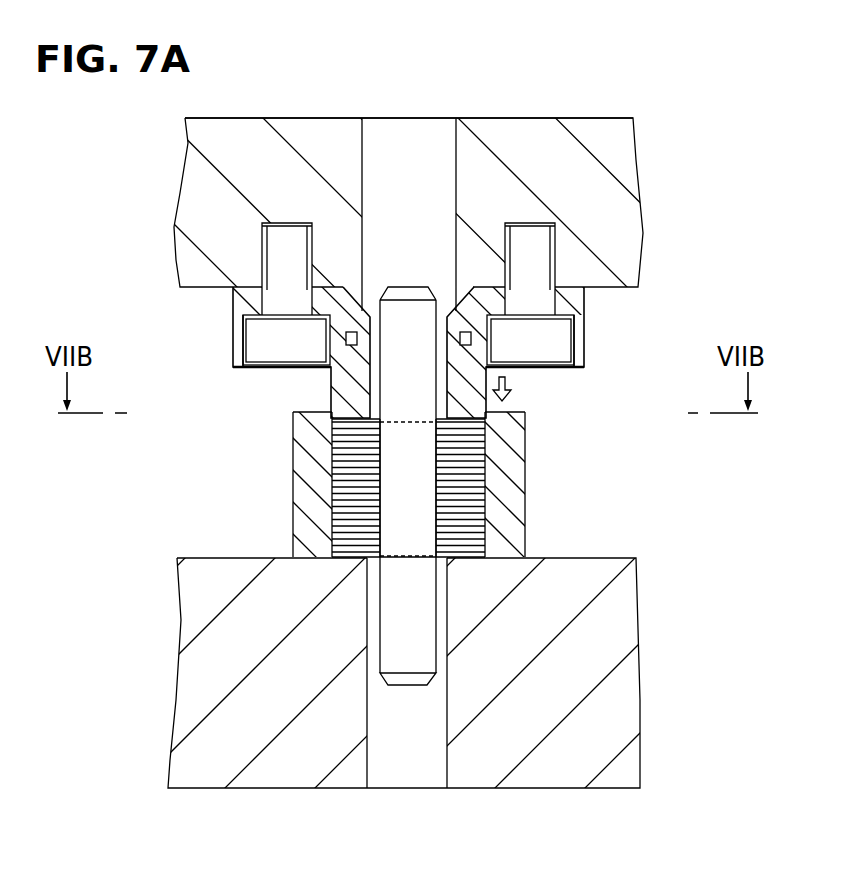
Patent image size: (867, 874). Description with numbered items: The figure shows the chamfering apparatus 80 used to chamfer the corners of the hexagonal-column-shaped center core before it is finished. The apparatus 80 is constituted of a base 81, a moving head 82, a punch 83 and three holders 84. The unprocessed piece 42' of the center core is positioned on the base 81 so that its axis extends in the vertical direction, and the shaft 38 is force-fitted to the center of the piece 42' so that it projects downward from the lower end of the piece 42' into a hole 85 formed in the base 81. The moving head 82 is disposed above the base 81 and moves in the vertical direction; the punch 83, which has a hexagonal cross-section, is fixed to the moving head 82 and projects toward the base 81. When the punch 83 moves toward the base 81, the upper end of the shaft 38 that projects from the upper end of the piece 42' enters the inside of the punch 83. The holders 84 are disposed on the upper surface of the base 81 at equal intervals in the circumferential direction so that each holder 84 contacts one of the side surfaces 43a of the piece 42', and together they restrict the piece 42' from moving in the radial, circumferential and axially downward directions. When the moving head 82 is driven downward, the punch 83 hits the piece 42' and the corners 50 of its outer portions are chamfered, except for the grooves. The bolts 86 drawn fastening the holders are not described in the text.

The chamfering apparatus 80 is at (637, 111).
The moving head 82 is at (200, 195).
The base 81 is at (197, 600).
The hole 85 is at (367, 748).
The punch 83 is at (345, 381).
The bolt 86 is at (408, 294).
The shaft 38 is at (405, 320).
The holder 84 is at (302, 488).
The corner 50 is at (330, 418).
The side surface 43a is at (330, 508).
The unprocessed piece 42' is at (468, 467).